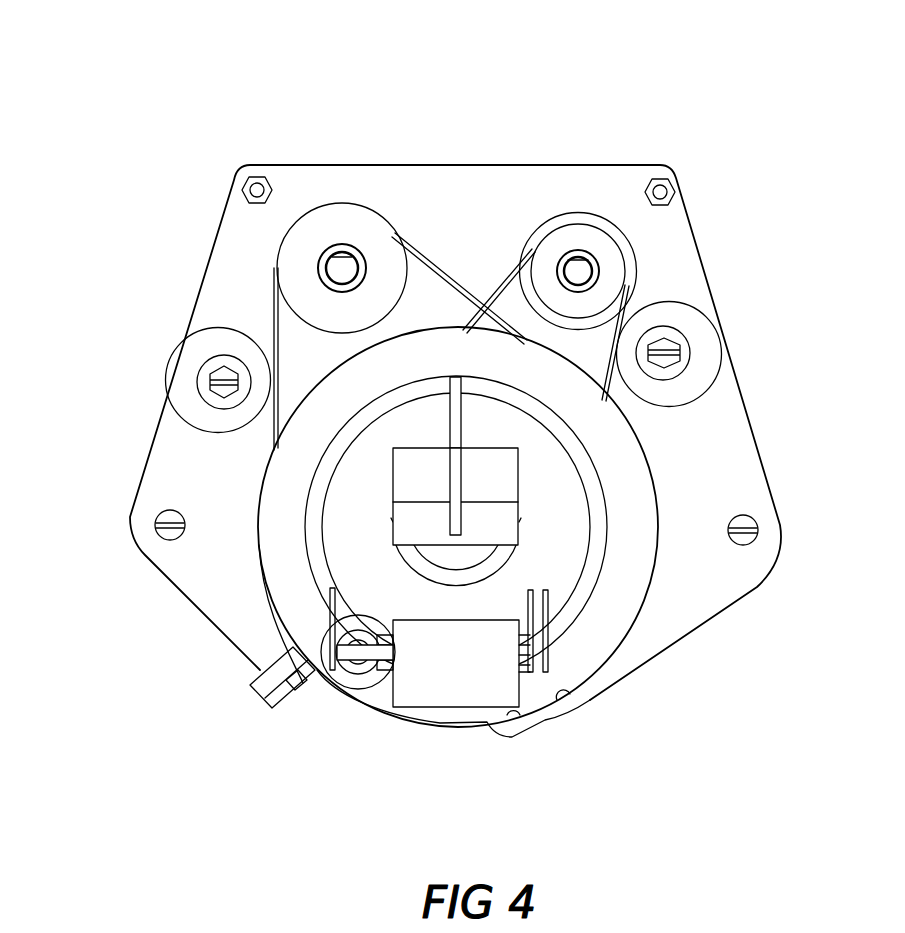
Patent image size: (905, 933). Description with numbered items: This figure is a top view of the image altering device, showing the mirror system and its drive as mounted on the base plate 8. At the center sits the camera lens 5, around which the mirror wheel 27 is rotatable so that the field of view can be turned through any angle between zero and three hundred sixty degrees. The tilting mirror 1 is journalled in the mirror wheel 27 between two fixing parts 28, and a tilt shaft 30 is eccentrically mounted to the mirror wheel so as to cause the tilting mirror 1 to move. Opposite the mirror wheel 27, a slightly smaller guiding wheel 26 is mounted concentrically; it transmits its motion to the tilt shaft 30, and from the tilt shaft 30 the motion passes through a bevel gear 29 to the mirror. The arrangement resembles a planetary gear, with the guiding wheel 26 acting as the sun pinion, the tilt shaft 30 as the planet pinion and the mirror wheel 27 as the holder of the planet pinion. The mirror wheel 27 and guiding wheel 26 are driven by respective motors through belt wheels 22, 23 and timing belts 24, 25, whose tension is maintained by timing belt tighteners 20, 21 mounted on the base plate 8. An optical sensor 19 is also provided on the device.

The tilting mirror 1 is at (448, 663).
The camera lens 5 is at (463, 553).
The base plate 8 is at (723, 450).
The optical sensor 19 is at (262, 693).
The timing belt tightener 20 is at (183, 373).
The timing belt tightener 21 is at (687, 317).
The belt wheel 22 is at (340, 225).
The belt wheel 23 is at (582, 235).
The timing belt 24 is at (275, 315).
The timing belt 25 is at (490, 290).
The guiding wheel 26 is at (360, 497).
The mirror wheel 27 is at (628, 547).
The fixing part 28 is at (327, 603).
The bevel gear 29 is at (325, 635).
The tilt shaft 30 is at (353, 660).